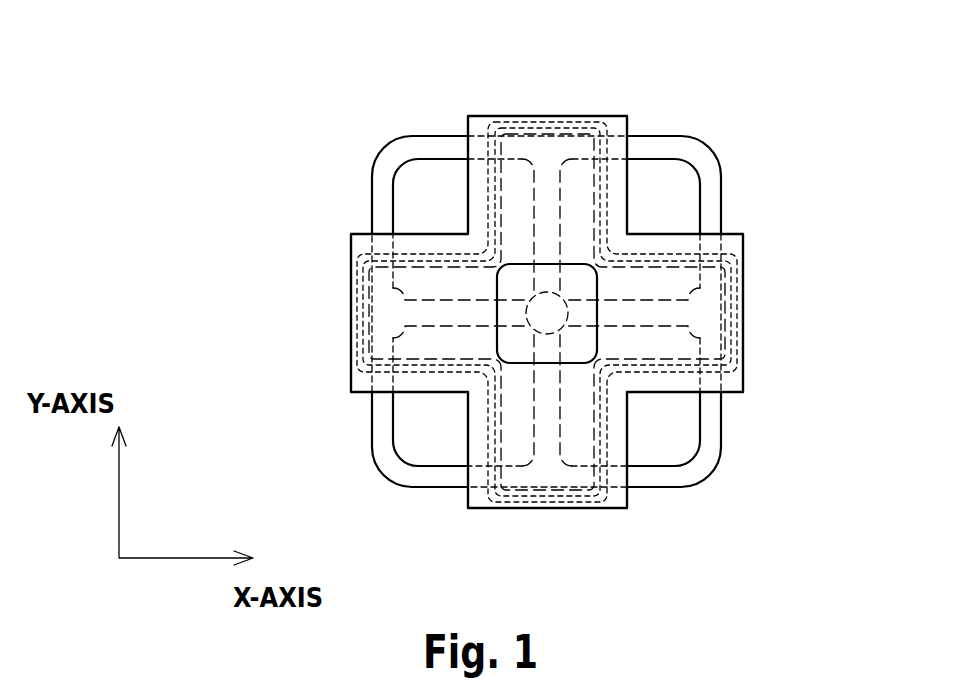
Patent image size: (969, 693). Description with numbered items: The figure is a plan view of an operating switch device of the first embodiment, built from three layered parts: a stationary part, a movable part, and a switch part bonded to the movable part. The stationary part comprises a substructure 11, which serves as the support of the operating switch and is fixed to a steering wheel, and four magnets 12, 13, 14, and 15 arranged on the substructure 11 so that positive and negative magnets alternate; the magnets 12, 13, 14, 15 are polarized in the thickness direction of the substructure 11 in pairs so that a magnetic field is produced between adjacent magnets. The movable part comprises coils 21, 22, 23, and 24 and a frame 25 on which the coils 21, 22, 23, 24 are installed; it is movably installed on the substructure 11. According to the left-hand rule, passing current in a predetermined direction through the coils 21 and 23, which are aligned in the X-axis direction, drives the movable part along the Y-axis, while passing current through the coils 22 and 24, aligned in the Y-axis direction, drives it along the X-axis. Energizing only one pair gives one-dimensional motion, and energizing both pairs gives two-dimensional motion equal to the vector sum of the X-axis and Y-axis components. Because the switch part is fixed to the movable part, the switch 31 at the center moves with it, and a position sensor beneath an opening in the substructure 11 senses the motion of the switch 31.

The substructure 11 is at (697, 473).
The magnet 12 is at (687, 190).
The magnet 13 is at (403, 192).
The magnet 14 is at (413, 445).
The magnet 15 is at (680, 420).
The coil 21 is at (670, 256).
The coil 22 is at (487, 172).
The coil 23 is at (413, 378).
The coil 24 is at (483, 445).
The frame 25 is at (627, 182).
The switch 31 is at (578, 290).